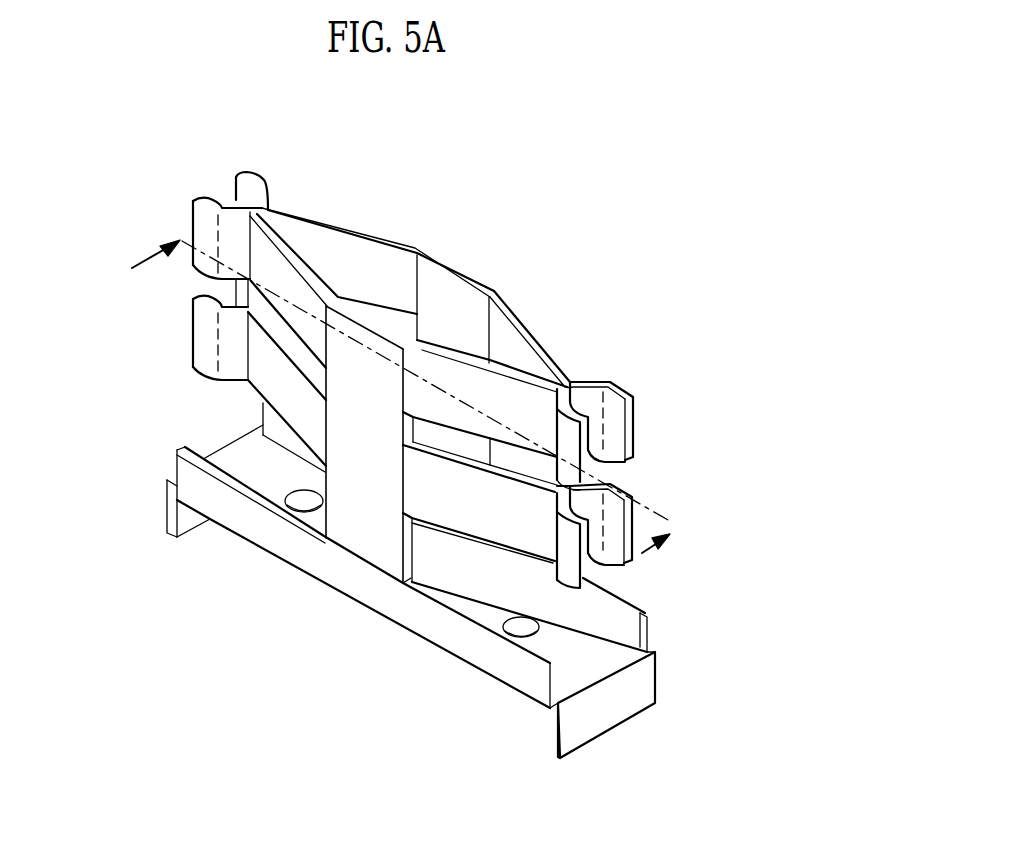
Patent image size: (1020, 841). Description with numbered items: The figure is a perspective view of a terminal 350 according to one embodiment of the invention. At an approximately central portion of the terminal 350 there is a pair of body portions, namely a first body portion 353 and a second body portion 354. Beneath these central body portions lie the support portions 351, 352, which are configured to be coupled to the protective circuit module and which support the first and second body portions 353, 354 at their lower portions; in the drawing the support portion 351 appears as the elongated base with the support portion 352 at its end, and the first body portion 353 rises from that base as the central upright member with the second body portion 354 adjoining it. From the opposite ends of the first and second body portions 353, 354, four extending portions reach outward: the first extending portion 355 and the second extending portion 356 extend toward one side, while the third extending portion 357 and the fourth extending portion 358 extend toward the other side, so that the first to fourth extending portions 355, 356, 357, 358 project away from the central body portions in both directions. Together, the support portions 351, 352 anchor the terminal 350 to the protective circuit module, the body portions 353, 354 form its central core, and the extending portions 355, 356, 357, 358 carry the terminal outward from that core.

The terminal 350 is at (653, 258).
The support portion 351 is at (493, 588).
The support portion 352 is at (613, 712).
The first body portion 353 is at (367, 528).
The second body portion 354 is at (473, 300).
The first extending portion 355 is at (436, 378).
The second extending portion 356 is at (541, 337).
The third extending portion 357 is at (278, 273).
The fourth extending portion 358 is at (333, 227).